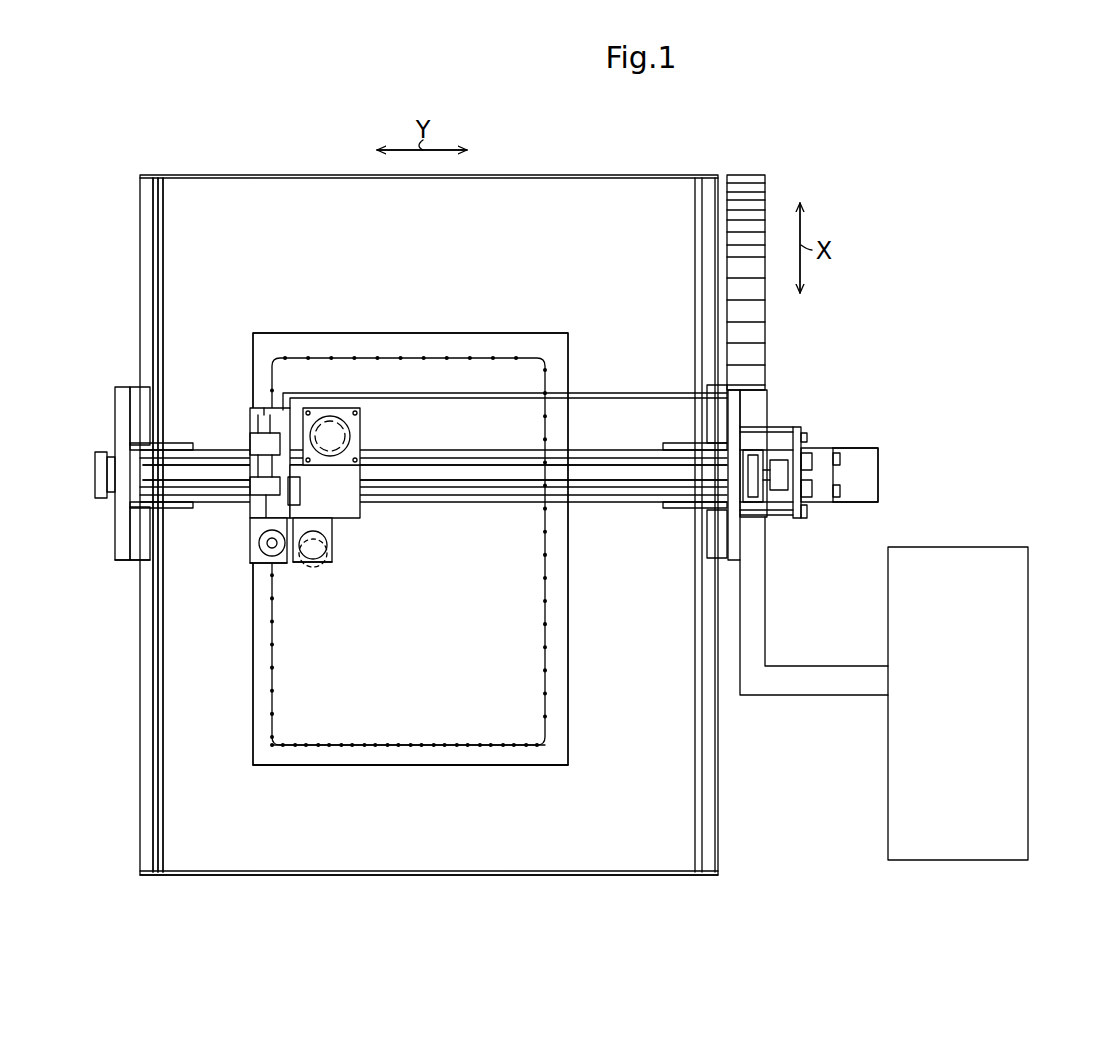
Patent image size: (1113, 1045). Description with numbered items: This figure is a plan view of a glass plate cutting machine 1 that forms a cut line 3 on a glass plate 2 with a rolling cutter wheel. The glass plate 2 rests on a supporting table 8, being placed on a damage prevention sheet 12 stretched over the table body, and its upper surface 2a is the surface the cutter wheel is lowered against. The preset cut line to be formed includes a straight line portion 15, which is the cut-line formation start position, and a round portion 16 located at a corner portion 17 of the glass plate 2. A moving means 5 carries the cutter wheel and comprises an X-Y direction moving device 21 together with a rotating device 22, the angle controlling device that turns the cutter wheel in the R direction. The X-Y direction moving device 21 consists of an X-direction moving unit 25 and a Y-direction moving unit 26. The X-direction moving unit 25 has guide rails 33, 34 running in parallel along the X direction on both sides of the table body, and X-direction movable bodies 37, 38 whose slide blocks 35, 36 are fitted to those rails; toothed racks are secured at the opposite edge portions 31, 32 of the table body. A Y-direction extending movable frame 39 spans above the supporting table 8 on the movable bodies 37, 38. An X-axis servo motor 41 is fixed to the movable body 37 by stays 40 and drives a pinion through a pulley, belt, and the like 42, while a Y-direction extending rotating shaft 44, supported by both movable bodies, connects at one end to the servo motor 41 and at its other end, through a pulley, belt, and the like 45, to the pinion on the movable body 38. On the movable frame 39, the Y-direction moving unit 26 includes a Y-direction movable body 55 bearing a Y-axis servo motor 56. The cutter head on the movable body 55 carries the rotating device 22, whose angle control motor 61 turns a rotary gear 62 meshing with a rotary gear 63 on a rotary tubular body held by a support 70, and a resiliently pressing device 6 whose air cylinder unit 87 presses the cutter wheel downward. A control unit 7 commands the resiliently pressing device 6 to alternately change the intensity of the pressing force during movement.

The glass plate cutting machine 1 is at (130, 178).
The glass plate 2 is at (420, 766).
The upper surface 2a is at (386, 757).
The cut line 3 is at (464, 747).
The moving means 5 is at (133, 366).
The resiliently pressing device 6 is at (250, 556).
The control unit 7 is at (1016, 548).
The supporting table 8 is at (426, 876).
The damage prevention sheet 12 is at (456, 876).
The straight line portion 15 is at (547, 670).
The round portion 16 is at (546, 748).
The corner portion 17 is at (263, 345).
The X-Y direction moving device 21 is at (126, 560).
The rotating device 22 is at (330, 562).
The X-direction moving unit 25 is at (833, 448).
The Y-direction moving unit 26 is at (356, 408).
The edge portion 31 is at (700, 790).
The edge portion 32 is at (160, 790).
The guide rail 33 is at (712, 760).
The guide rail 34 is at (150, 760).
The slide block 35 is at (715, 415).
The slide block 36 is at (152, 410).
The X-direction movable body 37 is at (736, 420).
The X-direction movable body 38 is at (120, 412).
The movable frame 39 is at (466, 496).
The stays 40 is at (770, 430).
The X-axis servo motor 41 is at (850, 460).
The pulley, belt, and the like 42 is at (756, 480).
The rotating shaft 44 is at (499, 482).
The pulley, belt, and the like 45 is at (102, 500).
The Y-direction movable body 55 is at (253, 410).
The Y-axis servo motor 56 is at (330, 417).
The angle control motor 61 is at (325, 545).
The rotary gear 62 is at (310, 567).
The rotary gear 63 is at (282, 562).
The support 70 is at (255, 530).
The air cylinder unit 87 is at (265, 560).